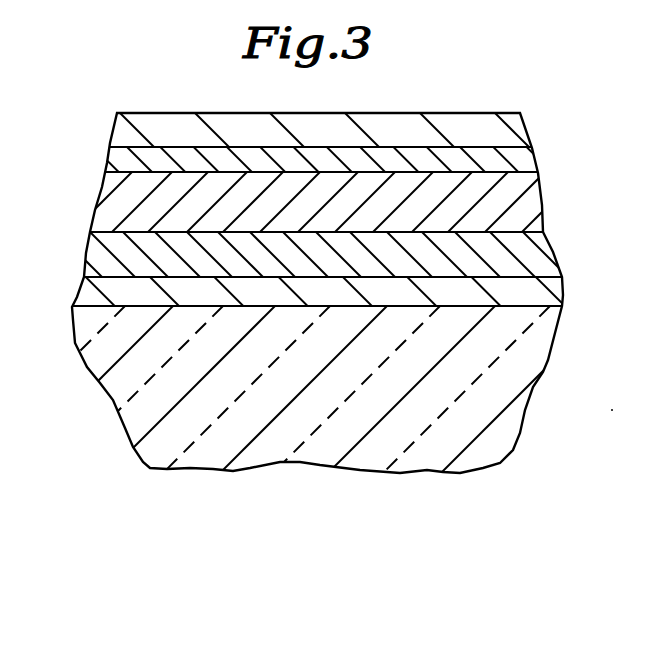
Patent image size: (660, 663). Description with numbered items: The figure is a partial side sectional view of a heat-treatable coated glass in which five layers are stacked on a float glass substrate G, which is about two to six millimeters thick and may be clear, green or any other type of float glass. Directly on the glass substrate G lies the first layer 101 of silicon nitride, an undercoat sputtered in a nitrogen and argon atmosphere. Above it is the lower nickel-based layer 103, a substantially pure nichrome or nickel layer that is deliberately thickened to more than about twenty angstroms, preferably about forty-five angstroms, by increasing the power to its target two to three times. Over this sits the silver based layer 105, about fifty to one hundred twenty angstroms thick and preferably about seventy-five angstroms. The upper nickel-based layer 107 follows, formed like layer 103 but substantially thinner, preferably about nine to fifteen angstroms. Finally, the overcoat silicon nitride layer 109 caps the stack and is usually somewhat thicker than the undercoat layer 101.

The overcoat silicon nitride layer 109 is at (521, 127).
The upper nickel-based layer 107 is at (531, 159).
The silver based layer 105 is at (530, 204).
The lower nickel-based layer 103 is at (537, 256).
The first layer 101 is at (544, 292).
The glass substrate G is at (500, 425).